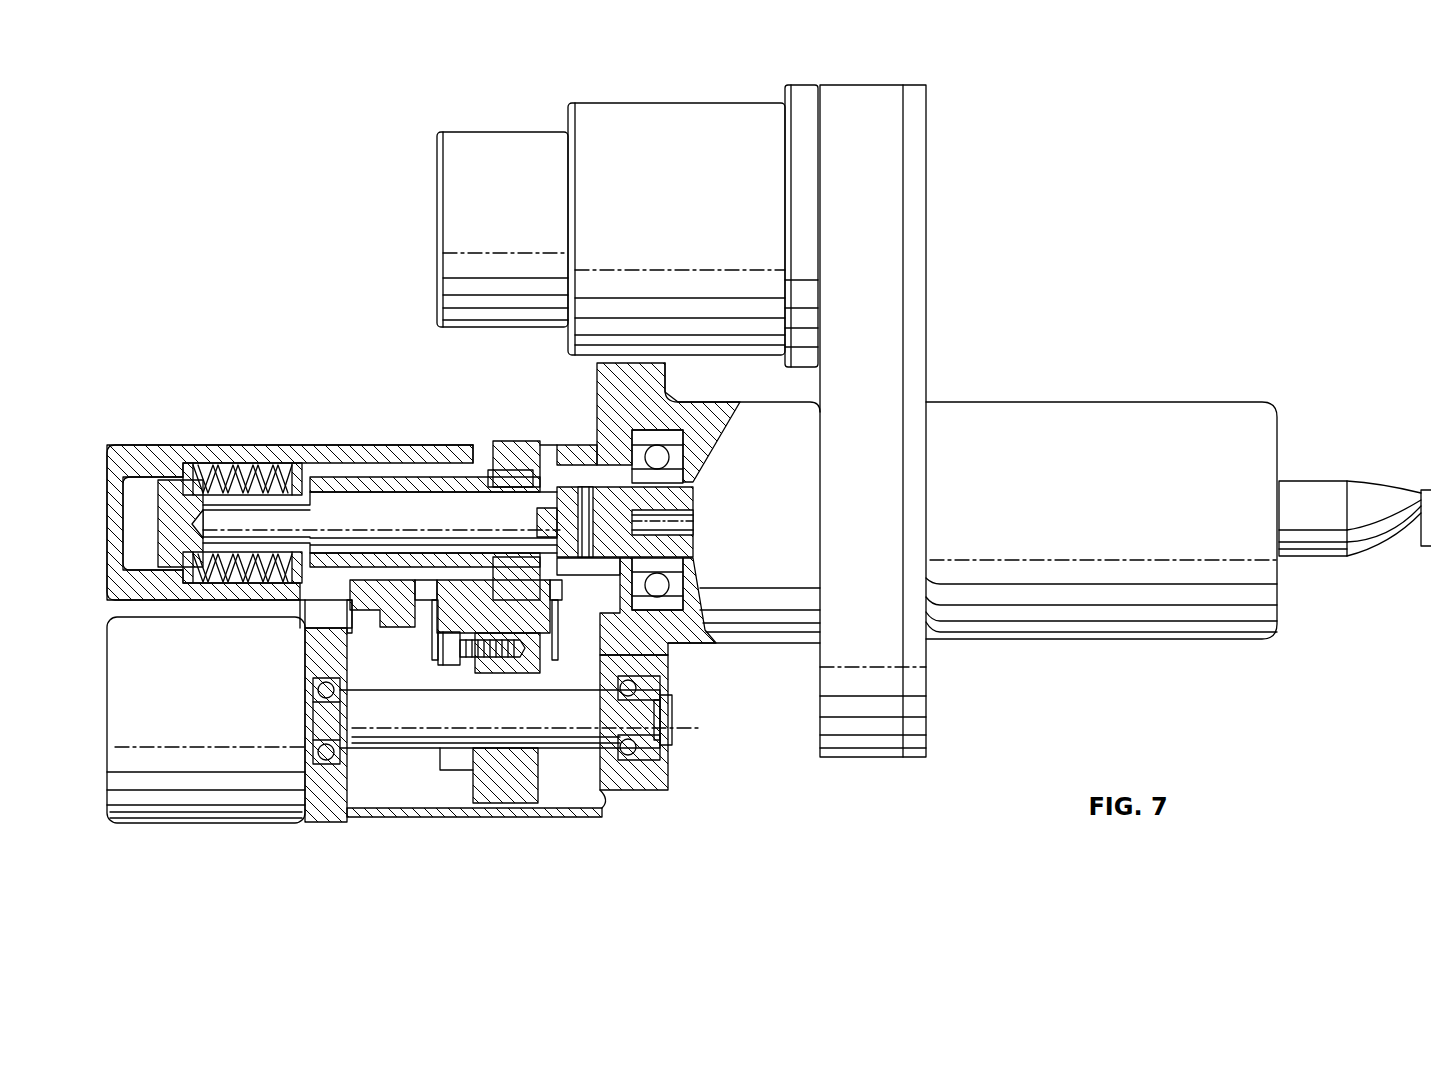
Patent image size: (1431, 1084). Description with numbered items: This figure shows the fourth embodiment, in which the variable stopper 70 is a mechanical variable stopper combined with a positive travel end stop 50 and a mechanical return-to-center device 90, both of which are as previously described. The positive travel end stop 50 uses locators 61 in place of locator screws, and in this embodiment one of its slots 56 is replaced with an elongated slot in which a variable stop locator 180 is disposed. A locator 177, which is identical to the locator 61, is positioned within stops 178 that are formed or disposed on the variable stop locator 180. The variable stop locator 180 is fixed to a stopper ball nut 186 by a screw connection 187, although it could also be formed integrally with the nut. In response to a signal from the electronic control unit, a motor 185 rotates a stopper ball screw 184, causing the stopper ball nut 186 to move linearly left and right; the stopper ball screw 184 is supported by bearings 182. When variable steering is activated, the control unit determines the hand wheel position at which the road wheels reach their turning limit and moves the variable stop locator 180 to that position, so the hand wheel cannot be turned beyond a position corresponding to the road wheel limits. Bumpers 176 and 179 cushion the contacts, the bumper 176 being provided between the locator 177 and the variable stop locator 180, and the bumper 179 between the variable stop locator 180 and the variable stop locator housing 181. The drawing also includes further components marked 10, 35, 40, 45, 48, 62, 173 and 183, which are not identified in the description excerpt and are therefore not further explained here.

The drive assembly 10 is at (1110, 260).
The electrical connector 35 is at (1313, 494).
The motor 40 is at (607, 118).
The mounting plate 45 is at (928, 226).
The motor output hub 48 is at (698, 560).
The positive travel end stop 50 is at (405, 407).
The slot 56 is at (548, 447).
The locator 61 is at (522, 447).
The flange 62 is at (560, 447).
The variable stopper 70 is at (283, 850).
The mechanical return-to-center device 90 is at (256, 426).
The coupling sleeve 173 is at (425, 593).
The bumper 176 is at (483, 580).
The locator 177 is at (517, 587).
The stop 178 is at (425, 640).
The bumper 179 is at (440, 600).
The variable stop locator 180 is at (590, 590).
The variable stop locator housing 181 is at (300, 617).
The bearing 182 is at (330, 697).
The lock nut 183 is at (630, 760).
The stopper ball screw 184 is at (640, 750).
The motor 185 is at (175, 797).
The stopper ball nut 186 is at (460, 780).
The screw connection 187 is at (445, 655).